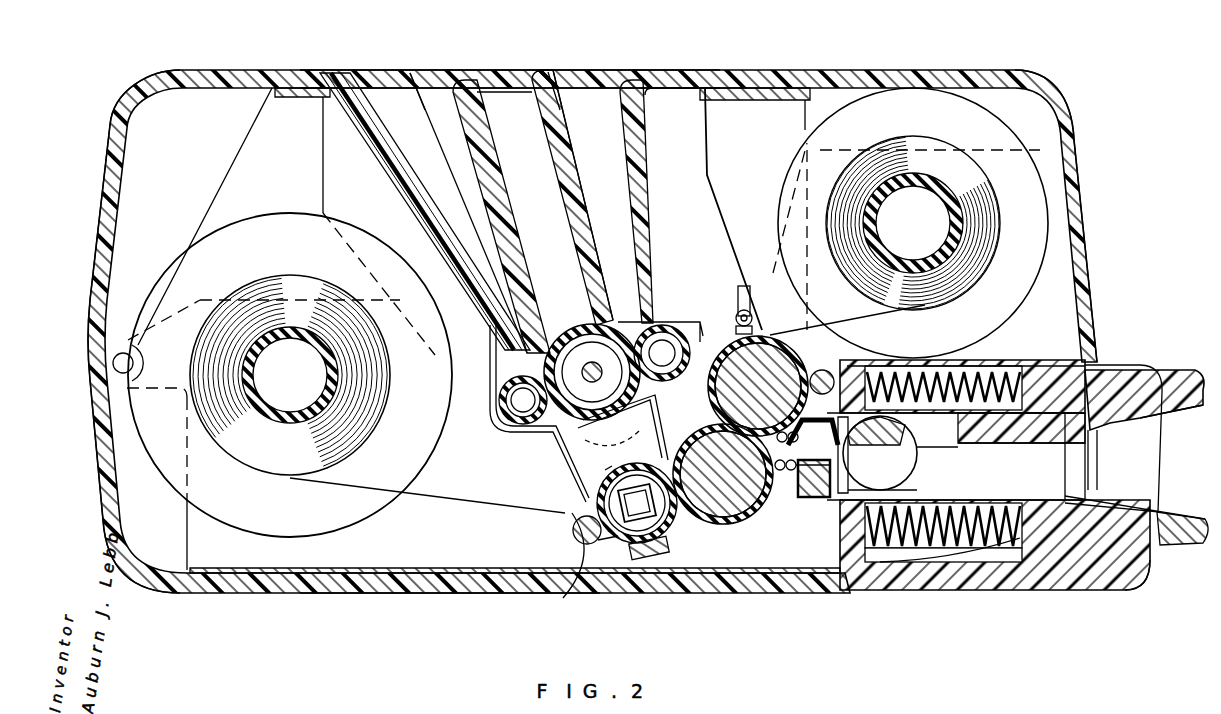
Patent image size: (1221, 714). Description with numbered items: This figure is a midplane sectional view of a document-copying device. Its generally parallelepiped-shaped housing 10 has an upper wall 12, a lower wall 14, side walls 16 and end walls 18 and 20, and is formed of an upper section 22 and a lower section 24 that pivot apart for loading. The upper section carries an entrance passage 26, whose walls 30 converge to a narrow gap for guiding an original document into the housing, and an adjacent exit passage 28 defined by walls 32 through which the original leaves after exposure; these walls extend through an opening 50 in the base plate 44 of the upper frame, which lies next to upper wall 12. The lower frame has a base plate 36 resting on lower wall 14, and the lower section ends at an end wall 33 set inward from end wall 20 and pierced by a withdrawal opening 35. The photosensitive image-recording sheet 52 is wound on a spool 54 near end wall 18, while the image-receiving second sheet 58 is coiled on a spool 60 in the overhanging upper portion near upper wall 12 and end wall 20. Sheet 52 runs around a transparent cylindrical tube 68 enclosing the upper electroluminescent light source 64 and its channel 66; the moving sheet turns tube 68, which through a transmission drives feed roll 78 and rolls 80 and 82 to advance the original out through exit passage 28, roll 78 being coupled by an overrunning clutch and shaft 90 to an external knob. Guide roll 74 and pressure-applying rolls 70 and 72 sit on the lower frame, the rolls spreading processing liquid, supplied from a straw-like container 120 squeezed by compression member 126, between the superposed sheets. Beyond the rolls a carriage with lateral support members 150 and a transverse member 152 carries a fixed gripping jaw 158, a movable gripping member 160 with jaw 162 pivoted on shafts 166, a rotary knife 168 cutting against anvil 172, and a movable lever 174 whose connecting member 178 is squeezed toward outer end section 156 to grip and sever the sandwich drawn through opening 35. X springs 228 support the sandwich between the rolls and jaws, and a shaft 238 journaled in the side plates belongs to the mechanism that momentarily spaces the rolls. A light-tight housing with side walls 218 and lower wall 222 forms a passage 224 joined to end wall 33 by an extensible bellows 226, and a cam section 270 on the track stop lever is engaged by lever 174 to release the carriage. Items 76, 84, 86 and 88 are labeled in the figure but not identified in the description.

The housing 10 is at (1060, 78).
The upper wall 12 is at (875, 72).
The lower wall 14 is at (397, 592).
The side walls 16 is at (159, 161).
The end wall 18 is at (109, 128).
The end wall 20 is at (1090, 248).
The upper section 22 is at (137, 84).
The lower section 24 is at (140, 598).
The entrance passage 26 is at (368, 73).
The exit passage 28 is at (603, 88).
The walls 30 is at (473, 170).
The walls 32 is at (563, 188).
The end wall 33 is at (893, 565).
The withdrawal opening 35 is at (910, 360).
The base plate 36 is at (317, 577).
The base plate 44 is at (776, 74).
The opening 50 is at (335, 72).
The photosensitive image-recording sheet 52 is at (472, 565).
The spool 54 is at (270, 517).
The second sheet 58 is at (797, 330).
The spool 60 is at (770, 335).
The upper electroluminescent light source 64 is at (637, 482).
The channel 66 is at (617, 535).
The cylindrical tube 68 is at (666, 590).
The roll 70 is at (740, 320).
The roll 72 is at (718, 524).
The guide roll 74 is at (585, 548).
The tape path 76 is at (415, 83).
The feed roll 78 is at (568, 322).
The roll 80 is at (503, 388).
The roll 82 is at (665, 326).
The carriage 84 is at (568, 458).
The roller bearing 86 is at (630, 487).
The carriage arm 88 is at (688, 328).
The shaft 90 is at (535, 456).
The container 120 is at (735, 338).
The compression member 126 is at (730, 238).
The lateral support members 150 is at (1062, 525).
The transverse member 152 is at (1055, 485).
The outer end section 156 is at (1195, 548).
The fixed gripping jaw 158 is at (890, 490).
The movable gripping member 160 is at (862, 360).
The gripping jaw 162 is at (885, 455).
The shafts 166 is at (912, 452).
The rotary knife 168 is at (893, 437).
The anvil 172 is at (808, 500).
The movable lever 174 is at (1135, 439).
The connecting member 178 is at (1172, 392).
The side walls 218 is at (1152, 470).
The lower wall 222 is at (1118, 592).
The passage 224 is at (1028, 500).
The extensible bellows 226 is at (962, 563).
The X springs 228 is at (790, 478).
The shaft 238 is at (822, 370).
The cam section 270 is at (1097, 462).